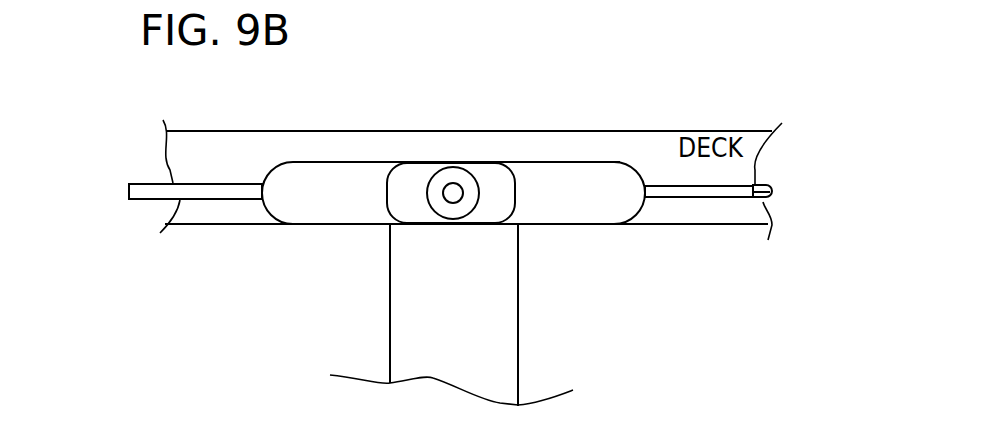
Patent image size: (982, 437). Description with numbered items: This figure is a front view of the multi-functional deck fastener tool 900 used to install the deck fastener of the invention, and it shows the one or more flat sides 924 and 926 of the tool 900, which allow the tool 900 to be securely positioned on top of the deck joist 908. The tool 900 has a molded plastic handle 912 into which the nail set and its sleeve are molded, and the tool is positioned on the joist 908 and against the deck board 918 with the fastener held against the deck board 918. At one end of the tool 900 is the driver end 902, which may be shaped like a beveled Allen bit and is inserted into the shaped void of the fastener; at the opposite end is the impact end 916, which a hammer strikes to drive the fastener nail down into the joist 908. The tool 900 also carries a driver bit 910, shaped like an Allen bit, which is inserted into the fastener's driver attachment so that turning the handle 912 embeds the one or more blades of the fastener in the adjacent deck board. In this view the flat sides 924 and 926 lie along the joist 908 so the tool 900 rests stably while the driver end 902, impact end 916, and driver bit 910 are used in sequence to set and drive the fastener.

The multi-functional deck fastener tool 900 is at (590, 116).
The driver end 902 is at (757, 182).
The joist 908 is at (470, 297).
The driver bit 910 is at (455, 193).
The plastic handle 912 is at (312, 177).
The impact end 916 is at (145, 182).
The deck board 918 is at (463, 147).
The flat side 924 is at (347, 227).
The flat side 926 is at (587, 162).